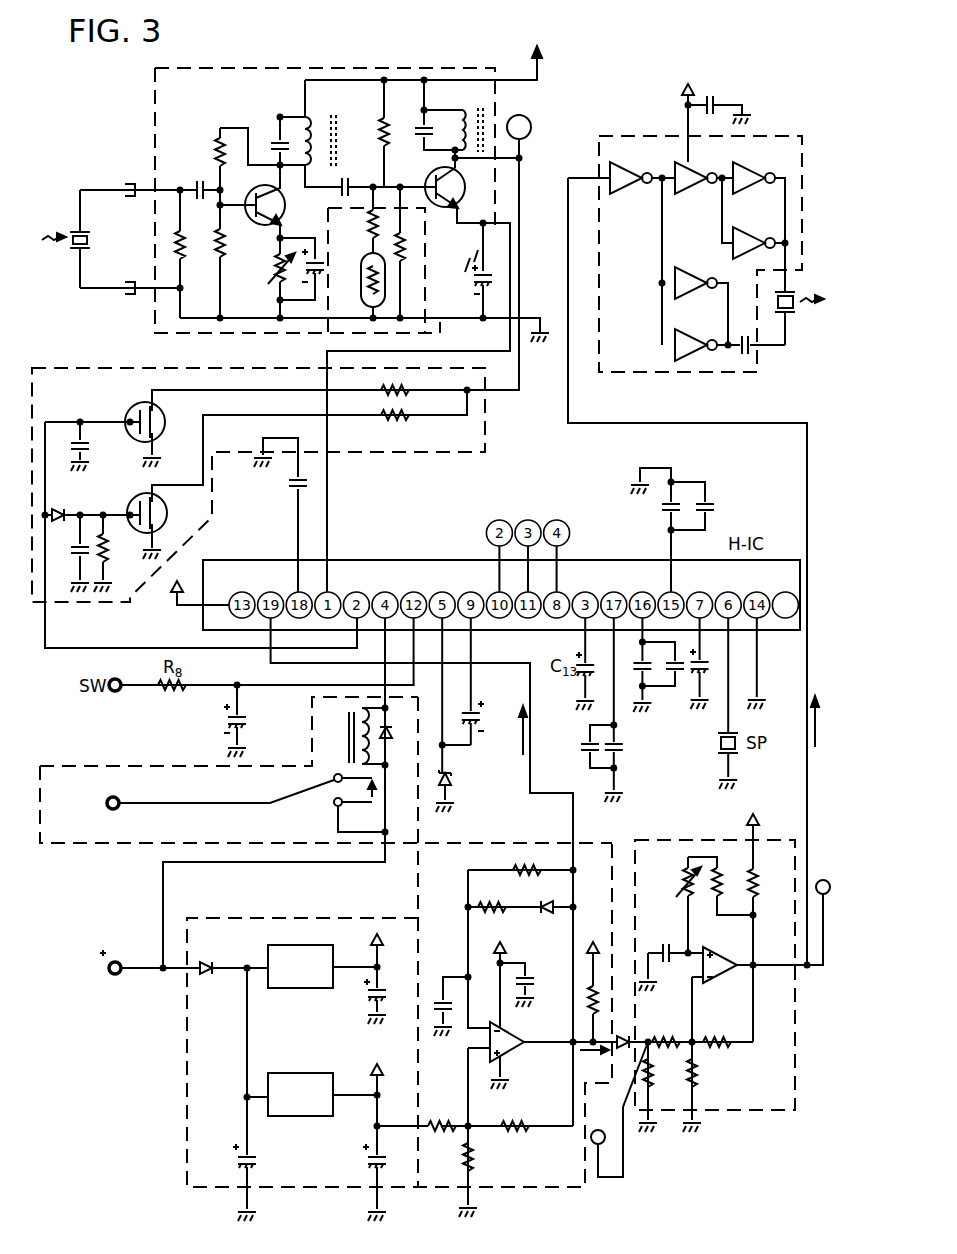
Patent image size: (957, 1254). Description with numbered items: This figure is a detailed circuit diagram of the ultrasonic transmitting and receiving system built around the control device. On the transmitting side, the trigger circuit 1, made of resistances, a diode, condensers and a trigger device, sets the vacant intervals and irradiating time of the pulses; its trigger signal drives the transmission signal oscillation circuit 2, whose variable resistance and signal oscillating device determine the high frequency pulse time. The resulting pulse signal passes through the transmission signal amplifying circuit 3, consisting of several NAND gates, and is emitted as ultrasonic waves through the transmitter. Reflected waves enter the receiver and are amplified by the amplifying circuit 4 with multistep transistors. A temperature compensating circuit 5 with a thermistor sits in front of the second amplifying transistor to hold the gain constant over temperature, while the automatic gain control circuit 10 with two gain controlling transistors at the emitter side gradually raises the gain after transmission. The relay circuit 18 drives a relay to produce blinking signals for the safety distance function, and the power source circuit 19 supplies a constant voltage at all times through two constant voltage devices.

The trigger circuit 1 is at (600, 840).
The transmission signal oscillation circuit 2 is at (775, 1112).
The transmission signal amplifying circuit 3 is at (758, 126).
The amplifying circuit 4 is at (380, 66).
The temperature compensating circuit 5 is at (425, 284).
The automatic gain control circuit 10 is at (78, 367).
The relay circuit 18 is at (100, 846).
The power source circuit 19 is at (186, 1060).